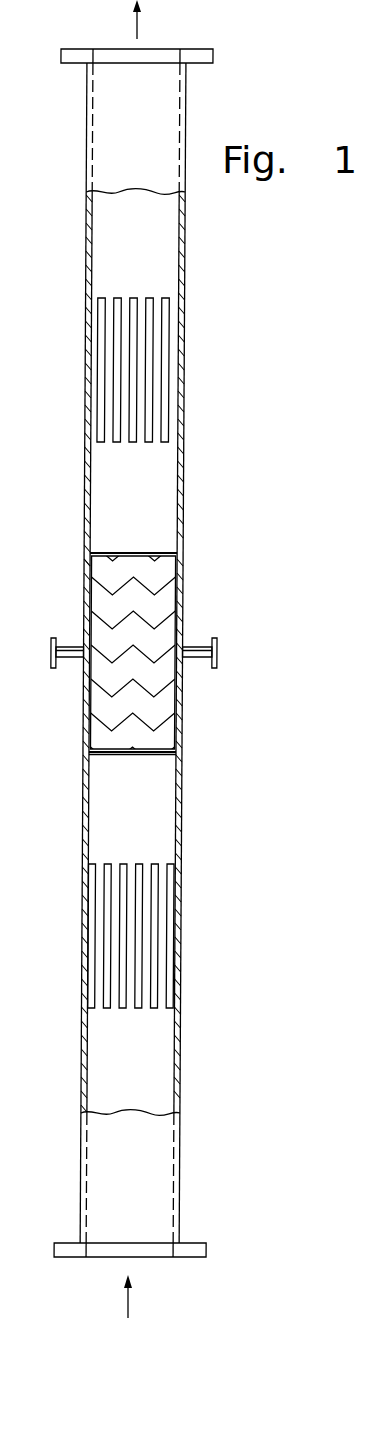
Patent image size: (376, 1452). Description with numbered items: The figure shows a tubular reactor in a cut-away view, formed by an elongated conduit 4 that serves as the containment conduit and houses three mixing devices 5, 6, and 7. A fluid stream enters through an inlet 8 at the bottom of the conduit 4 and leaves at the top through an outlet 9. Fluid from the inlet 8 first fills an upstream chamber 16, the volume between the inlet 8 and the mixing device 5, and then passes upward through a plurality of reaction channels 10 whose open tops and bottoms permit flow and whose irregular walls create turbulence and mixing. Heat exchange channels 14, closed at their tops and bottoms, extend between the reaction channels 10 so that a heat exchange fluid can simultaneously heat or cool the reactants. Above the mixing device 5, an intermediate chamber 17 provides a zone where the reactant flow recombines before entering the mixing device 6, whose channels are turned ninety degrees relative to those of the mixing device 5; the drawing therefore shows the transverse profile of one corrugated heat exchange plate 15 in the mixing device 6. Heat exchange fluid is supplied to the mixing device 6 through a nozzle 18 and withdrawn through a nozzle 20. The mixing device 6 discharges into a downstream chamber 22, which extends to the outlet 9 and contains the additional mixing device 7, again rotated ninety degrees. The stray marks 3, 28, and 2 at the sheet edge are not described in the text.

The elongated conduit 4 is at (177, 1138).
The mixing device 5 is at (185, 957).
The mixing device 6 is at (160, 688).
The mixing device 7 is at (170, 363).
The inlet 8 is at (130, 1296).
The outlet 9 is at (137, 18).
The channels 10 is at (112, 935).
The heat exchange channels 14 is at (122, 870).
The heat exchange plate 15 is at (143, 598).
The upstream chamber 16 is at (142, 1183).
The intermediate chamber 17 is at (137, 783).
The nozzle 18 is at (66, 663).
The nozzle 20 is at (199, 648).
The downstream chamber 22 is at (152, 119).
The adjacent figure element 3 is at (368, 965).
The adjacent figure element 28 is at (358, 1032).
The adjacent figure element 2 is at (369, 1124).